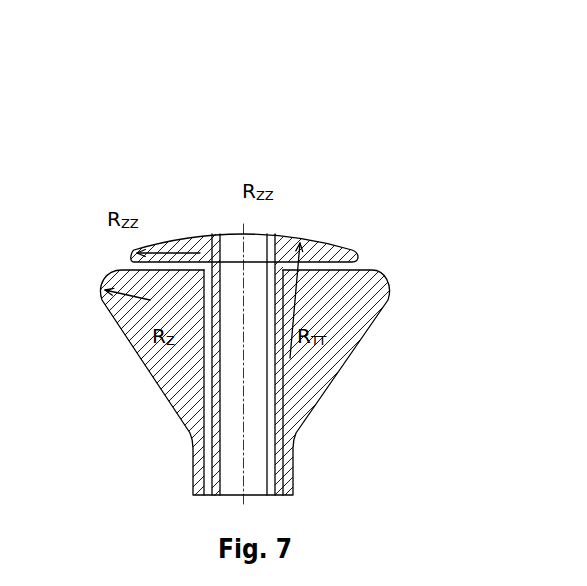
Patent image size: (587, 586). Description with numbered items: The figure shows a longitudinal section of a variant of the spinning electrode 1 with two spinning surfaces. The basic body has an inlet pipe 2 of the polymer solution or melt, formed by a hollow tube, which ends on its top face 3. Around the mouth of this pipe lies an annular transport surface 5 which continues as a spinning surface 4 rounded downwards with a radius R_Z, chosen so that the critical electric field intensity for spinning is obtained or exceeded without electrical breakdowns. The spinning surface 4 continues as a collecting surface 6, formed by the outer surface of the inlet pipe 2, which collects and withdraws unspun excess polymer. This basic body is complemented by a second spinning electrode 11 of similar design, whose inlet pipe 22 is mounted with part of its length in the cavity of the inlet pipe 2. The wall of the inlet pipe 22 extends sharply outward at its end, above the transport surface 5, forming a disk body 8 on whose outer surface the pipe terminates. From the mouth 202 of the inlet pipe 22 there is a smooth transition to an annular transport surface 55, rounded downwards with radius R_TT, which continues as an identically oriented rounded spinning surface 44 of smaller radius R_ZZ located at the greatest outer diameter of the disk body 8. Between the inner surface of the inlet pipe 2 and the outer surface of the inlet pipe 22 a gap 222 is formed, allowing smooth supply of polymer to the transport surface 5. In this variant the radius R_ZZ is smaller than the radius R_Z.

The spinning electrode 1 is at (167, 85).
The second spinning electrode 11 is at (203, 200).
The mouth of the inlet pipe 202 is at (235, 235).
The top face 3 is at (130, 266).
The disk body 8 is at (276, 250).
The transport surface 55 is at (313, 233).
The spinning surface 44 is at (352, 242).
The transport surface 5 is at (357, 270).
The spinning surface 4 is at (392, 295).
The collecting surface 6 is at (352, 378).
The inlet pipe 2 is at (293, 452).
The gap 222 is at (280, 465).
The inlet pipe 22 is at (293, 497).